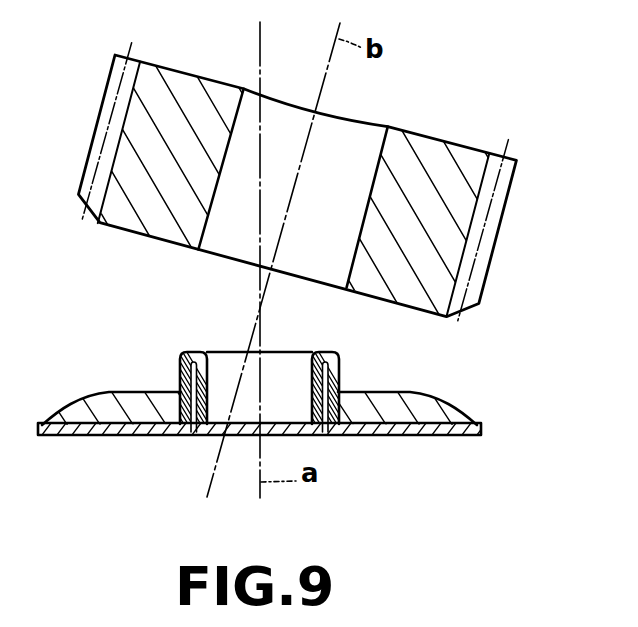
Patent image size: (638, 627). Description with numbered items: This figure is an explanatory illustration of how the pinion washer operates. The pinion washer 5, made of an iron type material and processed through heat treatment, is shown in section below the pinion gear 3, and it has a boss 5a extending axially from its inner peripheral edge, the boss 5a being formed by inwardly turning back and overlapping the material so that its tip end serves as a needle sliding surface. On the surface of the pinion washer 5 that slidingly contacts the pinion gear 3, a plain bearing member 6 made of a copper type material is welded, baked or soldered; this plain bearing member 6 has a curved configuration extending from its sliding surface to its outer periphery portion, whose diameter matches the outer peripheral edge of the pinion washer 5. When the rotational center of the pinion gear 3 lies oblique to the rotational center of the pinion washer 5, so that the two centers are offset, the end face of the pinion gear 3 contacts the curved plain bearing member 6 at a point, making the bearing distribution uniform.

The pinion gear 3 is at (461, 223).
The pinion washer 5 is at (421, 437).
The boss 5a is at (181, 361).
The plain bearing member 6 is at (122, 391).